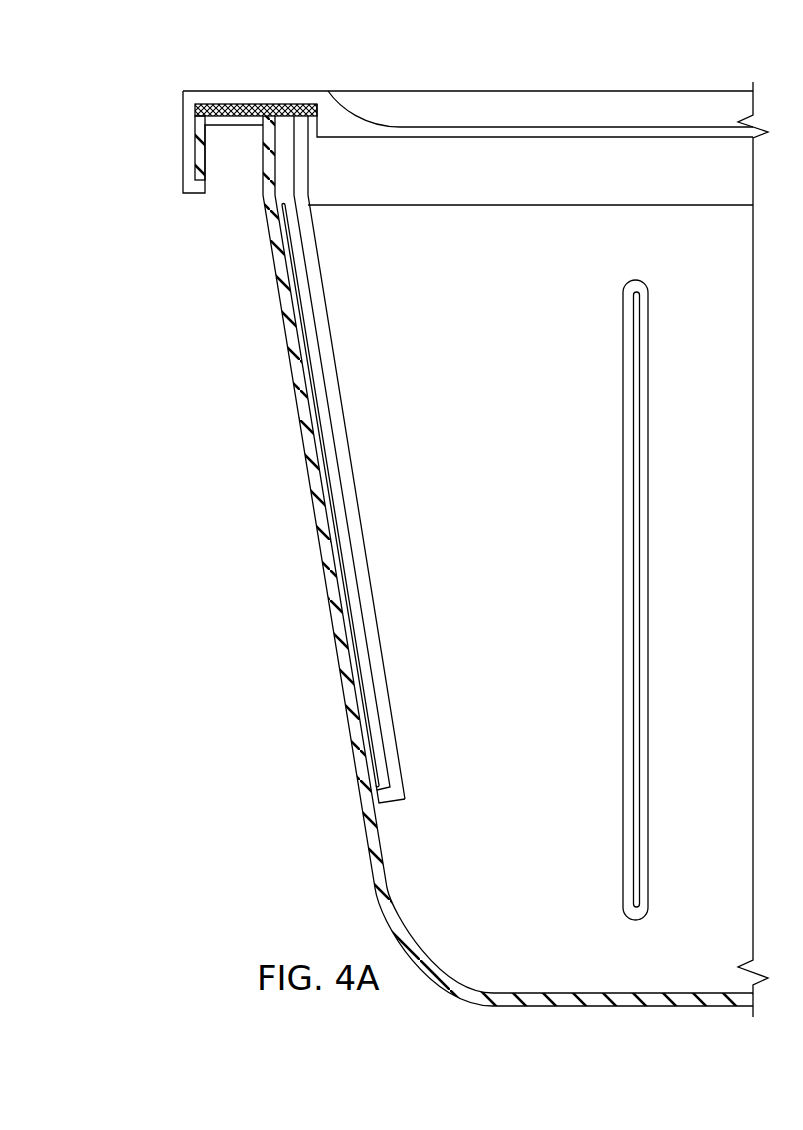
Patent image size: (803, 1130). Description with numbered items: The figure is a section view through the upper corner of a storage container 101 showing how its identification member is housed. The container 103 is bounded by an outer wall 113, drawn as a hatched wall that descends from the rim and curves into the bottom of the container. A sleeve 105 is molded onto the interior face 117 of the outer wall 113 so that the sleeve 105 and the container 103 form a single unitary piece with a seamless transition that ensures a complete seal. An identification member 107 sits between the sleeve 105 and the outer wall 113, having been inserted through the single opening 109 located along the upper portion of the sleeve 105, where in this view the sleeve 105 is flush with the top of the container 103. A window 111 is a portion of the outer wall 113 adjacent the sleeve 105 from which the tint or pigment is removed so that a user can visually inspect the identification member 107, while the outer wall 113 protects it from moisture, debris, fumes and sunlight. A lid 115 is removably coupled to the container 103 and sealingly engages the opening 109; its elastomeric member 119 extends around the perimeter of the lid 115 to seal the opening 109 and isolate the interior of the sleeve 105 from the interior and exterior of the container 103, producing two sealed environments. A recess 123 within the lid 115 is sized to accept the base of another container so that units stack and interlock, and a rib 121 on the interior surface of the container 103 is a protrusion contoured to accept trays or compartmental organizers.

The storage container 101 is at (75, 181).
The container 103 is at (308, 471).
The sleeve 105 is at (366, 553).
The identification member 107 is at (320, 427).
The opening 109 is at (287, 148).
The window 111 is at (286, 614).
The outer wall 113 is at (366, 828).
The lid 115 is at (472, 91).
The interior face 117 is at (383, 851).
The elastomeric member 119 is at (287, 104).
The rib 121 is at (622, 378).
The recess 123 is at (349, 108).